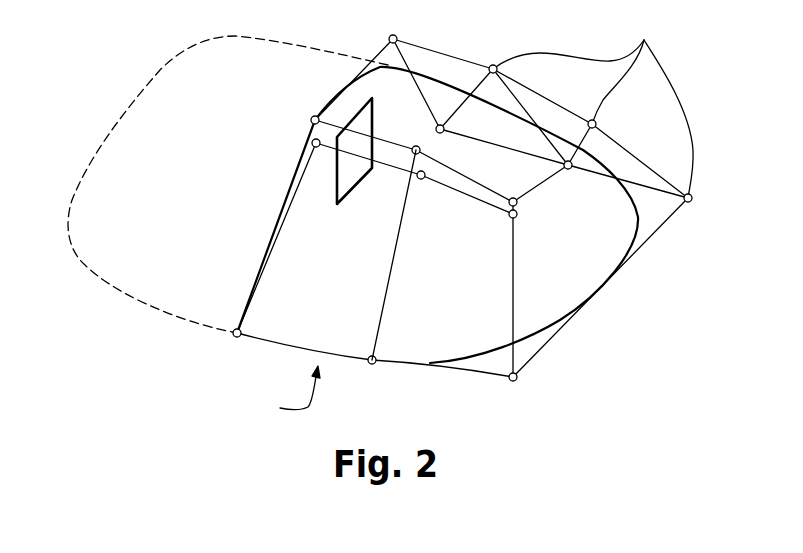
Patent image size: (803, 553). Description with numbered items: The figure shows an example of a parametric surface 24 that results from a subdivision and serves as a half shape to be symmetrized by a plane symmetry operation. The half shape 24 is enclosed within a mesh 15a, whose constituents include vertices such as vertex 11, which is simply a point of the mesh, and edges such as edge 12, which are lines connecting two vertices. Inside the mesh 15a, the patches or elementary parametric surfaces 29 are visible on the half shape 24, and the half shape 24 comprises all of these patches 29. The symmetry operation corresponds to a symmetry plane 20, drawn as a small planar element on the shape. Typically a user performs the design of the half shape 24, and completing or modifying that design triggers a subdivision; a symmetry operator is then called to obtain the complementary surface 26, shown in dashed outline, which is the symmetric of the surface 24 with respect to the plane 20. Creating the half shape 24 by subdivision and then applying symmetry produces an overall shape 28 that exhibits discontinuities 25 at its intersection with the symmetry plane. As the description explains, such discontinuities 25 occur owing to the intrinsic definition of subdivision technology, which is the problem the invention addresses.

The vertex 11 is at (513, 377).
The edge 12 is at (625, 265).
The mesh 15a is at (593, 104).
The symmetry plane 20 is at (337, 183).
The parametric surface 24 is at (361, 255).
The discontinuities 25 is at (236, 337).
The complementary surface 26 is at (228, 184).
The shape 28 is at (283, 394).
The patches 29 is at (464, 208).